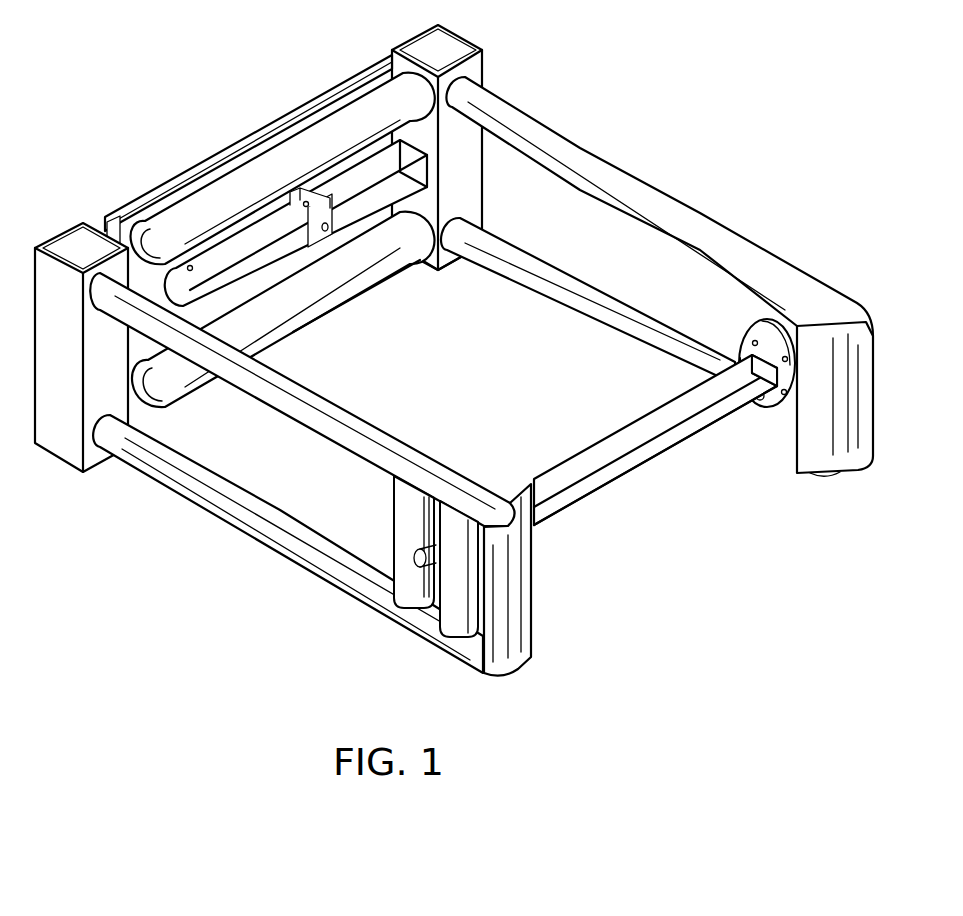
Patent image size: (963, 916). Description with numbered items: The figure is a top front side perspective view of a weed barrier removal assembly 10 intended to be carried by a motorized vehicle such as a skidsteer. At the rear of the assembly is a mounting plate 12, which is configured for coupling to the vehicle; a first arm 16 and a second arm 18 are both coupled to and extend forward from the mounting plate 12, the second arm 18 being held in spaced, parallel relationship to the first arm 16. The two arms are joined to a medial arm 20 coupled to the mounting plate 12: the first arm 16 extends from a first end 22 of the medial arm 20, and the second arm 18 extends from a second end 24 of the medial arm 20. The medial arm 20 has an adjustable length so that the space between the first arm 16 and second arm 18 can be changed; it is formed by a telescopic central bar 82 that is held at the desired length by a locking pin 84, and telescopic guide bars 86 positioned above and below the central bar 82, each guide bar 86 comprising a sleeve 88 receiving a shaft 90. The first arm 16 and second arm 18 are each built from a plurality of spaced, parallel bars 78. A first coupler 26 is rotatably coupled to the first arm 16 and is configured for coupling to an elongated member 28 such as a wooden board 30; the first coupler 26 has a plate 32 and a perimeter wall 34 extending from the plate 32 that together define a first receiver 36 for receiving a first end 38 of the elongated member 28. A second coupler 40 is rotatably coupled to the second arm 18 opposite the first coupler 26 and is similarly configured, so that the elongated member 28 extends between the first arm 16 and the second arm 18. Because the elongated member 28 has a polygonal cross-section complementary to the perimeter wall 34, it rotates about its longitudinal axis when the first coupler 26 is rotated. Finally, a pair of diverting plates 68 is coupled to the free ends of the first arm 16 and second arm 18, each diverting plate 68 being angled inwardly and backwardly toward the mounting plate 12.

The weed barrier removal assembly 10 is at (612, 76).
The mounting plate 12 is at (150, 192).
The first arm 16 is at (684, 178).
The second arm 18 is at (206, 522).
The medial arm 20 is at (393, 297).
The first end 22 is at (483, 68).
The second end 24 is at (50, 440).
The first coupler 26 is at (770, 325).
The elongated member 28 is at (627, 468).
The wooden board 30 is at (572, 513).
The plate 32 is at (745, 318).
The perimeter wall 34 is at (757, 379).
The first receiver 36 is at (760, 400).
The first end 38 is at (740, 365).
The second coupler 40 is at (436, 518).
The diverting plate 68 is at (517, 592).
The bars 78 is at (587, 152).
The central bar 82 is at (256, 244).
The locking pin 84 is at (195, 262).
The guide bar 86 is at (267, 173).
The sleeve 88 is at (307, 127).
The shaft 90 is at (128, 238).